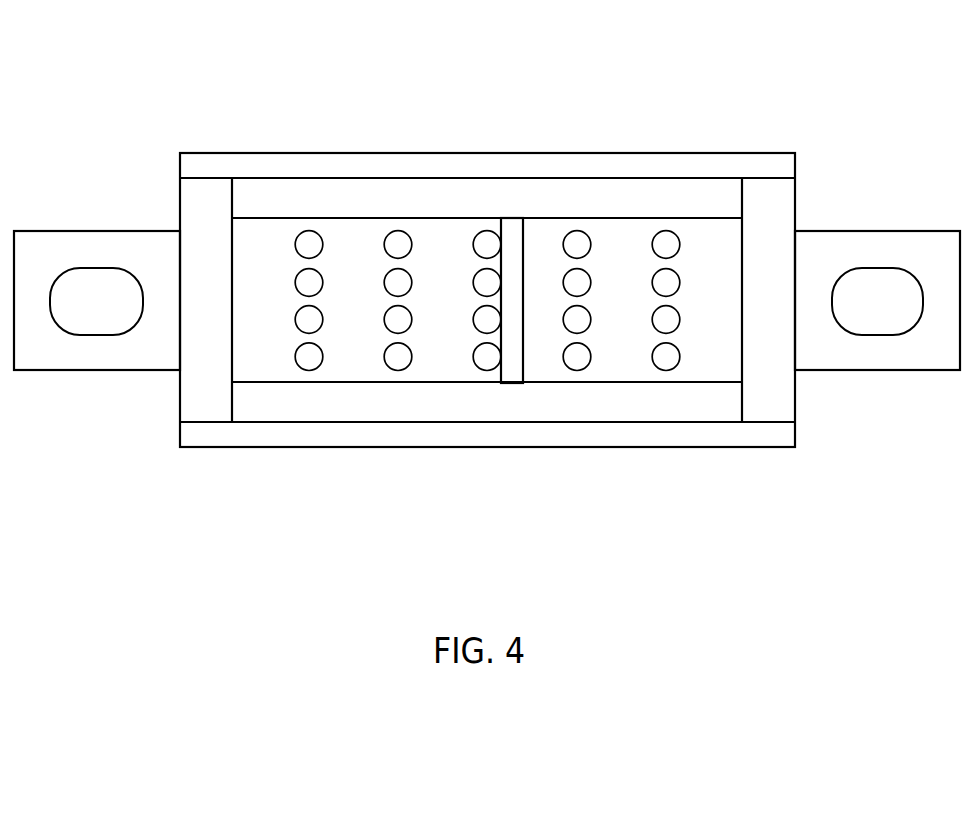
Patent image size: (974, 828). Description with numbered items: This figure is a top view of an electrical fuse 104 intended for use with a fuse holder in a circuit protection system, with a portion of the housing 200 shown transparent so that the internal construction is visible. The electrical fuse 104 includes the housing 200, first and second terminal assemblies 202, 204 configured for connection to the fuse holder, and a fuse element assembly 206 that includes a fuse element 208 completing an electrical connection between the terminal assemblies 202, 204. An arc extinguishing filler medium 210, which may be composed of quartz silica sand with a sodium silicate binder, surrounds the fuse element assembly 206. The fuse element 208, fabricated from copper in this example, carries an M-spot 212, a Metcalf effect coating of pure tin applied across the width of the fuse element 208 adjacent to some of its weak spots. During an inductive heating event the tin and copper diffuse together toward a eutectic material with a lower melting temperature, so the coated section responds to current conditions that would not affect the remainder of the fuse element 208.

The electrical fuse 104 is at (792, 125).
The housing 200 is at (591, 153).
The first terminal assembly 202 is at (180, 188).
The second terminal assembly 204 is at (795, 188).
The fuse element assembly 206 is at (716, 396).
The fuse element 208 is at (625, 383).
The arc extinguishing filler medium 210 is at (412, 200).
The M-spot 212 is at (513, 209).